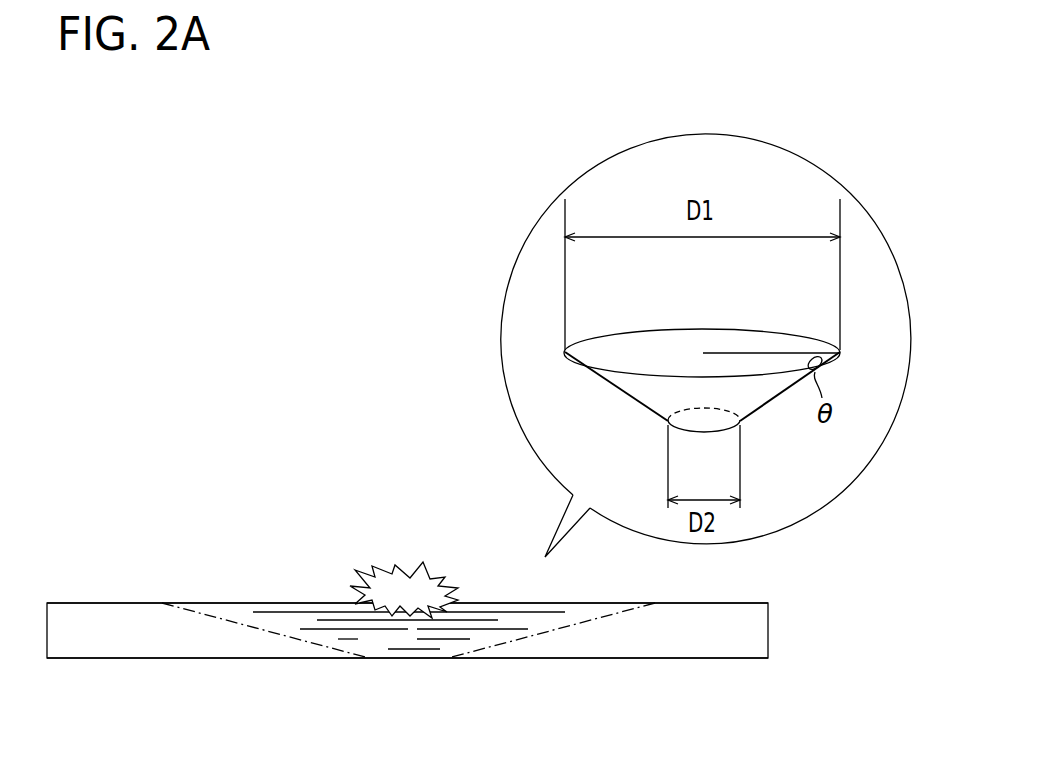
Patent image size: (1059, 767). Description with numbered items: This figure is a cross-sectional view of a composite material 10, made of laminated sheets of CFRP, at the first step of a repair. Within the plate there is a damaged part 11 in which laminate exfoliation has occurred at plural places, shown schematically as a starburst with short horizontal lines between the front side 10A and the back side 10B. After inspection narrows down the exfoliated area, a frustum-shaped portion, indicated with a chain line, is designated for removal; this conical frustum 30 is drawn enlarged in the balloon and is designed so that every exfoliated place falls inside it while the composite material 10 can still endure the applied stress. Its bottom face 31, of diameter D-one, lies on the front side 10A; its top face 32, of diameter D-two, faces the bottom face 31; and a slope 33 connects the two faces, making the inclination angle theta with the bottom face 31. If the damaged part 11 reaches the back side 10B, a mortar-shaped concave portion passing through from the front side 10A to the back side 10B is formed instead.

The composite material 10 is at (757, 590).
The front side 10A is at (140, 603).
The back side 10B is at (128, 658).
The damaged part 11 is at (318, 603).
The conical frustum 30 is at (502, 644).
The bottom face 31 is at (669, 334).
The top face 32 is at (705, 415).
The slope 33 is at (772, 402).